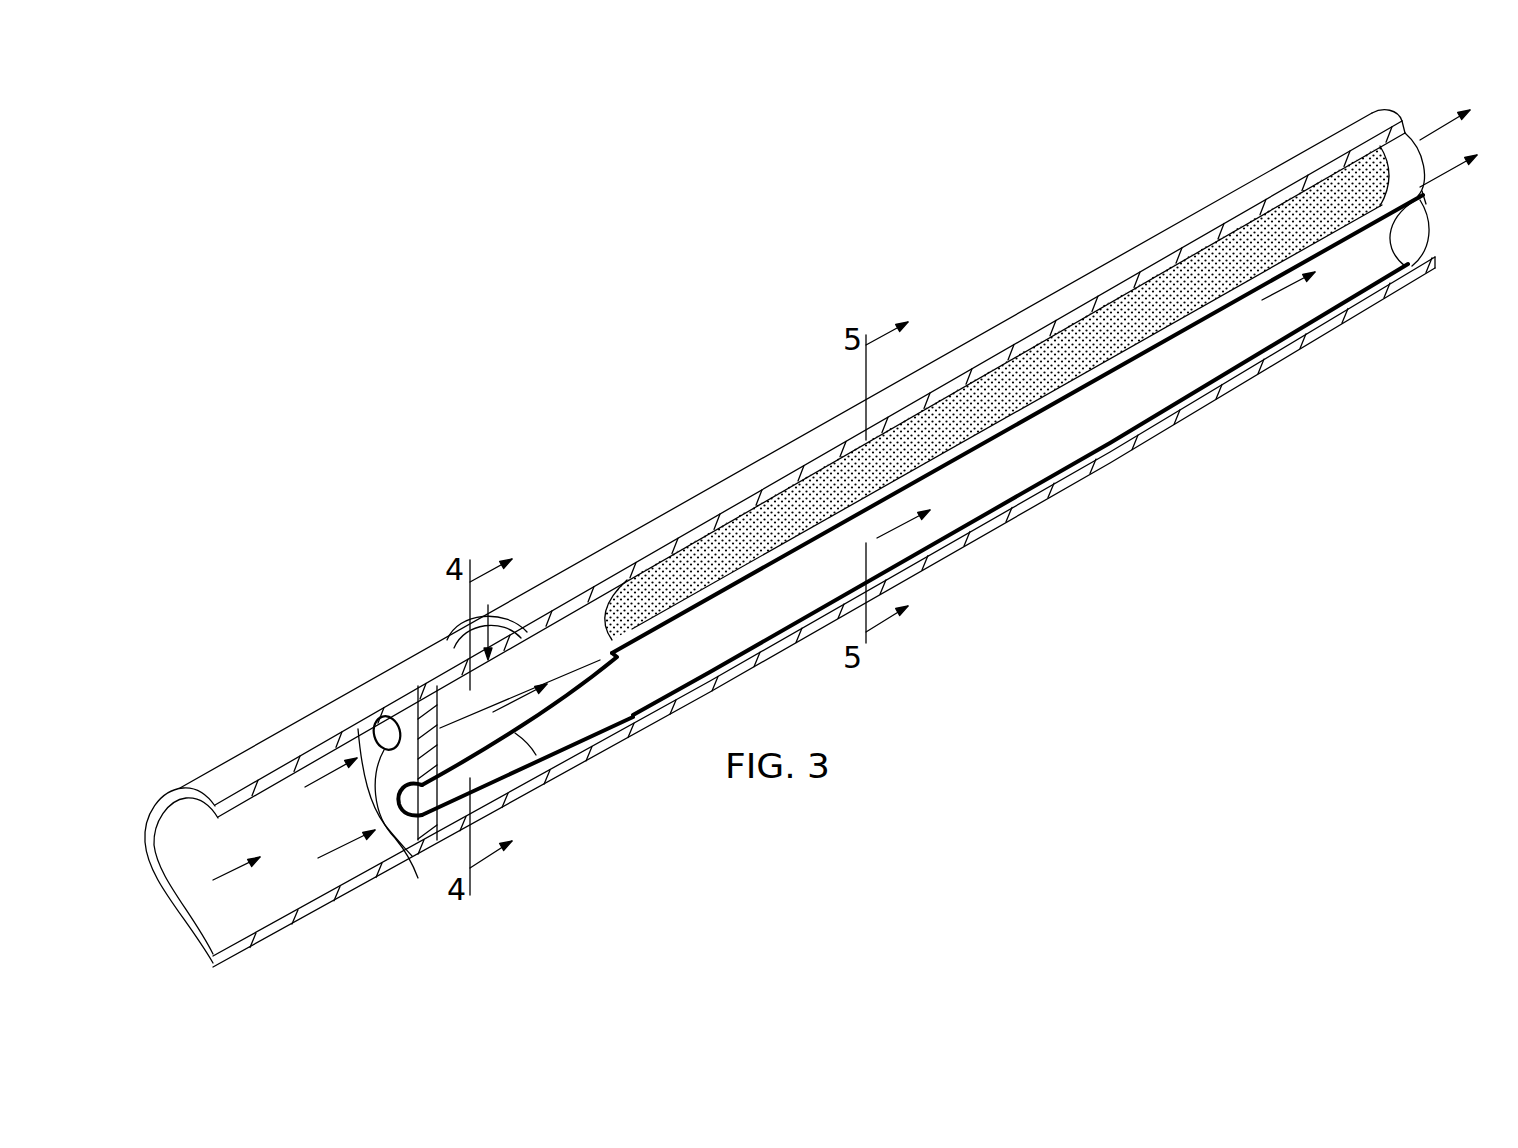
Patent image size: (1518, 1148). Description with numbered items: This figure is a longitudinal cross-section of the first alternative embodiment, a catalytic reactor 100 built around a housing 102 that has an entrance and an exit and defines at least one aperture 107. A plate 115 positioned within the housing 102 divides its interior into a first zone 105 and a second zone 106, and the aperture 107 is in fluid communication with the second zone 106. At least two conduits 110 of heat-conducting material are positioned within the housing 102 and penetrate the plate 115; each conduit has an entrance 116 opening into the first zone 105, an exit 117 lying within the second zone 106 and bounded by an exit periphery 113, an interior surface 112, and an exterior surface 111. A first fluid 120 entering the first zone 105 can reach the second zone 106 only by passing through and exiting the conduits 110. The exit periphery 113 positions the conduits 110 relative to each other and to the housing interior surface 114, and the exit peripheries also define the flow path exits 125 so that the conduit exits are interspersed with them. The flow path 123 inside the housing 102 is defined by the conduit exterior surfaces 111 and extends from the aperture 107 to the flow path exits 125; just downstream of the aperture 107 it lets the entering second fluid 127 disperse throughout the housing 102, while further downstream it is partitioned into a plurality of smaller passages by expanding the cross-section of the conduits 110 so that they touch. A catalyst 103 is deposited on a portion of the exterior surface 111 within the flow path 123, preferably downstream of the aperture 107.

The catalytic reactor 100 is at (640, 502).
The housing 102 is at (270, 753).
The catalyst 103 is at (694, 604).
The first zone 105 is at (290, 878).
The second zone 106 is at (503, 698).
The aperture 107 is at (463, 638).
The conduits 110 is at (444, 660).
The exterior surface 111 is at (583, 620).
The interior surface 112 is at (492, 762).
The exit periphery 113 is at (1378, 126).
The housing interior surface 114 is at (364, 878).
The plate 115 is at (395, 690).
The entrance 116 is at (410, 845).
The exit 117 is at (1428, 236).
The first fluid 120 is at (232, 870).
The flow path 123 is at (1112, 372).
The flow path exits 125 is at (1403, 263).
The second fluid 127 is at (488, 603).